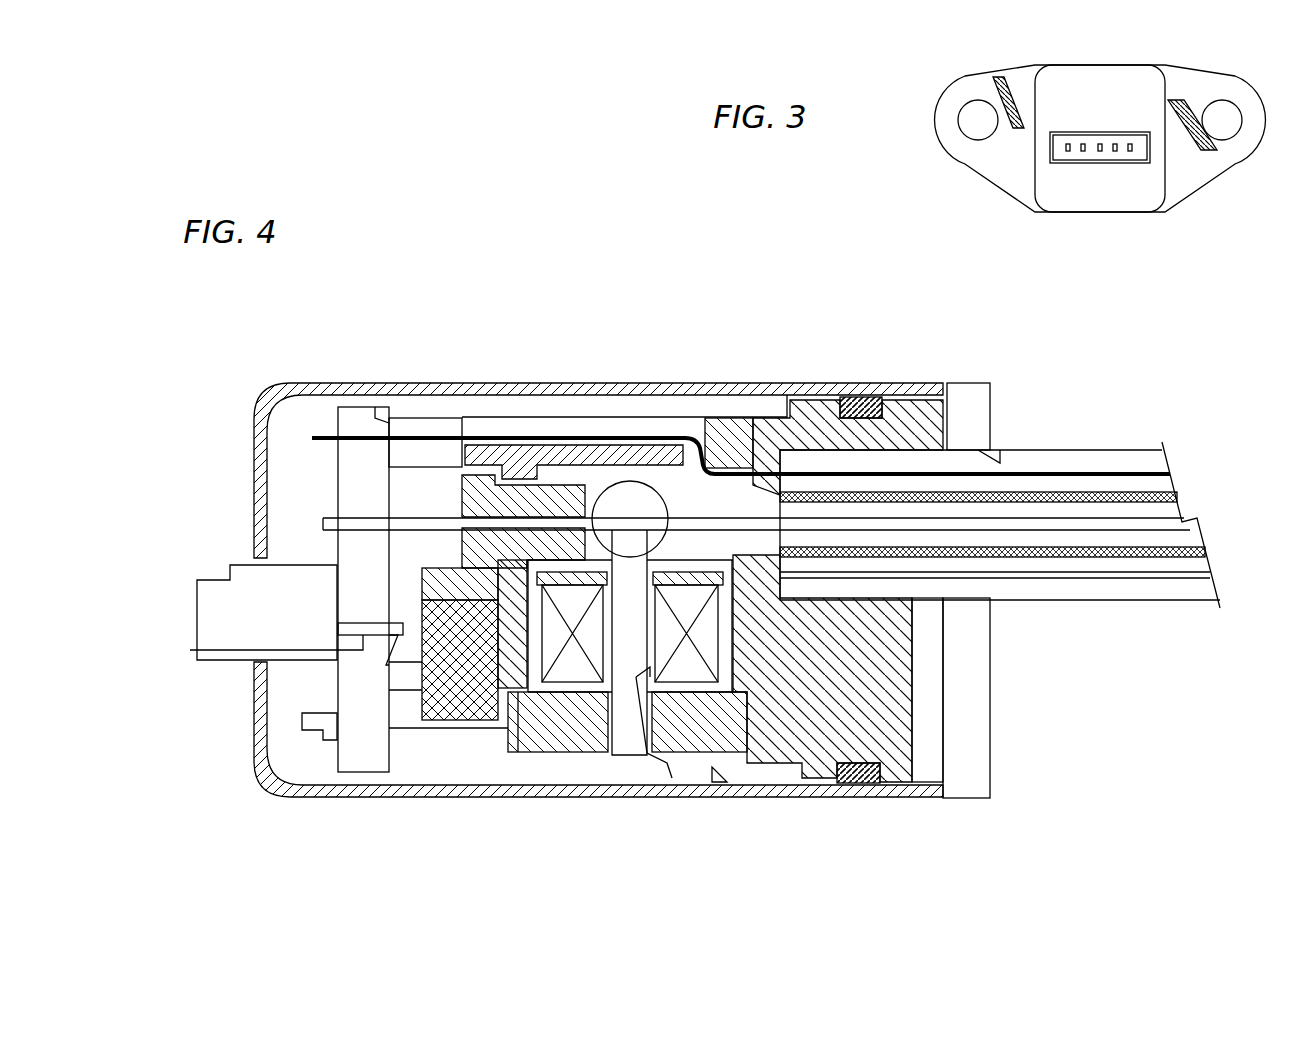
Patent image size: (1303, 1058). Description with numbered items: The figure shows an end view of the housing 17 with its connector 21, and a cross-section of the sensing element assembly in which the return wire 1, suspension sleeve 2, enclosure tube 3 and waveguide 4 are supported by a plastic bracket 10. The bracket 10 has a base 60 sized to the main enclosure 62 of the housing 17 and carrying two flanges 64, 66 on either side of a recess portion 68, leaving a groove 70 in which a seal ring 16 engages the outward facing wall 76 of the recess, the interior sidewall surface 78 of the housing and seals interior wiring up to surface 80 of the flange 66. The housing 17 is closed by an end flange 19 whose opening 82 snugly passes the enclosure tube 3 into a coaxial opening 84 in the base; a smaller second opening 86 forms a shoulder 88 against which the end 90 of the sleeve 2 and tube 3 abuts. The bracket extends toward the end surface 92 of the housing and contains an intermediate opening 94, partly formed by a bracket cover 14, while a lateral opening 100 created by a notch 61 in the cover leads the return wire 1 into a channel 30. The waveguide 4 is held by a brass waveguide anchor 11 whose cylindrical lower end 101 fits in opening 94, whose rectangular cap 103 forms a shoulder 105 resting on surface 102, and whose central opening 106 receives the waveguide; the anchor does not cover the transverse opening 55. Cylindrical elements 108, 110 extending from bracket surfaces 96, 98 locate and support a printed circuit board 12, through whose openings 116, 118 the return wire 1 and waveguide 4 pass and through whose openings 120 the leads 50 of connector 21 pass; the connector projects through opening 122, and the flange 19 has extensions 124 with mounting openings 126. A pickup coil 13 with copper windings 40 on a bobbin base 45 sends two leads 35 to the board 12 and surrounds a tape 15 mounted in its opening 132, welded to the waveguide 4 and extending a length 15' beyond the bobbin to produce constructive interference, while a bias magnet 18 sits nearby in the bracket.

In FIG. 3, the return wire 1 is at (1098, 138).
In FIG. 4, the return wire 1 is at (310, 434).
In FIG. 4, the suspension sleeve 2 is at (1107, 568).
In FIG. 4, the enclosure tube 3 is at (1095, 450).
In FIG. 3, the waveguide 4 is at (1068, 151).
In FIG. 4, the waveguide 4 is at (1128, 518).
In FIG. 4, the bracket 10 is at (750, 560).
In FIG. 4, the waveguide anchor 11 is at (462, 505).
In FIG. 4, the printed circuit board 12 is at (337, 758).
In FIG. 4, the pickup coil 13 is at (580, 754).
In FIG. 4, the bracket cover 14 is at (592, 425).
In FIG. 4, the tape 15 is at (627, 693).
In FIG. 4, the length of tape beyond bobbin 15' is at (667, 762).
In FIG. 4, the seal ring 16 is at (872, 784).
In FIG. 3, the housing 17 is at (1150, 73).
In FIG. 4, the housing 17 is at (757, 797).
In FIG. 4, the bias magnet 18 is at (446, 722).
In FIG. 3, the end flange 19 is at (1008, 183).
In FIG. 4, the end flange 19 is at (972, 690).
In FIG. 3, the connector 21 is at (1068, 133).
In FIG. 4, the connector 21 is at (197, 588).
In FIG. 4, the channel 30 is at (479, 430).
In FIG. 3, the leads of pickup coil 35 is at (1115, 140).
In FIG. 4, the leads of pickup coil 35 is at (323, 745).
In FIG. 4, the copper windings 40 is at (555, 640).
In FIG. 4, the bobbin base 45 is at (588, 730).
In FIG. 3, the leads 50 is at (1083, 151).
In FIG. 4, the leads 50 is at (385, 665).
In FIG. 4, the opening 55 is at (619, 446).
In FIG. 4, the base 60 is at (912, 720).
In FIG. 4, the notch 61 is at (673, 470).
In FIG. 4, the main enclosure 62 is at (410, 405).
In FIG. 4, the flange 64 is at (912, 400).
In FIG. 4, the flange 66 is at (814, 430).
In FIG. 4, the recess portion 68 is at (870, 748).
In FIG. 4, the groove 70 is at (845, 784).
In FIG. 4, the outward facing wall 76 is at (861, 398).
In FIG. 4, the interior sidewall surface 78 is at (712, 782).
In FIG. 4, the surface of flange 80 is at (792, 404).
In FIG. 4, the opening 82 is at (1000, 463).
In FIG. 4, the opening 84 is at (958, 400).
In FIG. 4, the second opening 86 is at (733, 508).
In FIG. 4, the shoulder 88 is at (780, 470).
In FIG. 4, the end 90 is at (758, 470).
In FIG. 3, the end surface 92 is at (1107, 192).
In FIG. 4, the end surface 92 is at (262, 713).
In FIG. 4, the intermediate opening 94 is at (525, 465).
In FIG. 4, the end surface of bracket 96 is at (377, 407).
In FIG. 4, the end of bracket 98 is at (422, 585).
In FIG. 4, the lateral opening 100 is at (632, 497).
In FIG. 4, the lower end 101 is at (560, 465).
In FIG. 4, the surface 102 is at (477, 600).
In FIG. 4, the cap 103 is at (463, 490).
In FIG. 4, the shoulder 105 is at (504, 450).
In FIG. 4, the central opening 106 is at (514, 754).
In FIG. 4, the cylindrical shaped elements 108 is at (439, 417).
In FIG. 4, the cylindrical member 110 is at (407, 690).
In FIG. 4, the opening 116 is at (358, 430).
In FIG. 4, the opening 118 is at (355, 547).
In FIG. 4, the openings 120 is at (362, 640).
In FIG. 4, the opening 122 is at (252, 548).
In FIG. 3, the extensions 124 is at (1227, 88).
In FIG. 3, the openings 126 is at (977, 122).
In FIG. 4, the opening 132 is at (637, 680).